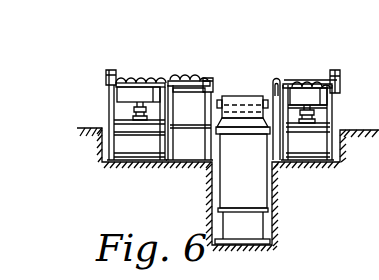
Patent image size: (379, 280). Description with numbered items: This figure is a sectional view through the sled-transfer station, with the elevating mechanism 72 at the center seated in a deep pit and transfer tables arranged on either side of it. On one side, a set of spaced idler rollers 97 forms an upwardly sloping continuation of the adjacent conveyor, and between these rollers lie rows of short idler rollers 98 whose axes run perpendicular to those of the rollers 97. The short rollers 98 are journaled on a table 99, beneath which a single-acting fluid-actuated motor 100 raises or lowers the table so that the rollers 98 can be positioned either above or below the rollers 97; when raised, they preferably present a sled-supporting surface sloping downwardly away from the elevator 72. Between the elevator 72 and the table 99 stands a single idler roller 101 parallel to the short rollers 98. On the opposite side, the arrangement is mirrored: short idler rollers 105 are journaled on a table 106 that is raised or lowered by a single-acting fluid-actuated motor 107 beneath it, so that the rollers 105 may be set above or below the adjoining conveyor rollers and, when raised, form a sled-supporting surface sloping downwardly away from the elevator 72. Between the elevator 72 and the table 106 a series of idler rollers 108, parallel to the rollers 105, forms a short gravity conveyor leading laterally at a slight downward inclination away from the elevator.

The elevating mechanism 72 is at (242, 170).
The spaced idler rollers 97 is at (299, 86).
The short idler rollers 98 is at (305, 84).
The table 99 is at (325, 97).
The single-acting fluid-actuated motor 100 is at (309, 124).
The single idler roller 101 is at (277, 76).
The short idler rollers 105 is at (133, 79).
The table 106 is at (120, 91).
The single-acting fluid-actuated motor 107 is at (140, 121).
The series of idler rollers 108 is at (204, 79).